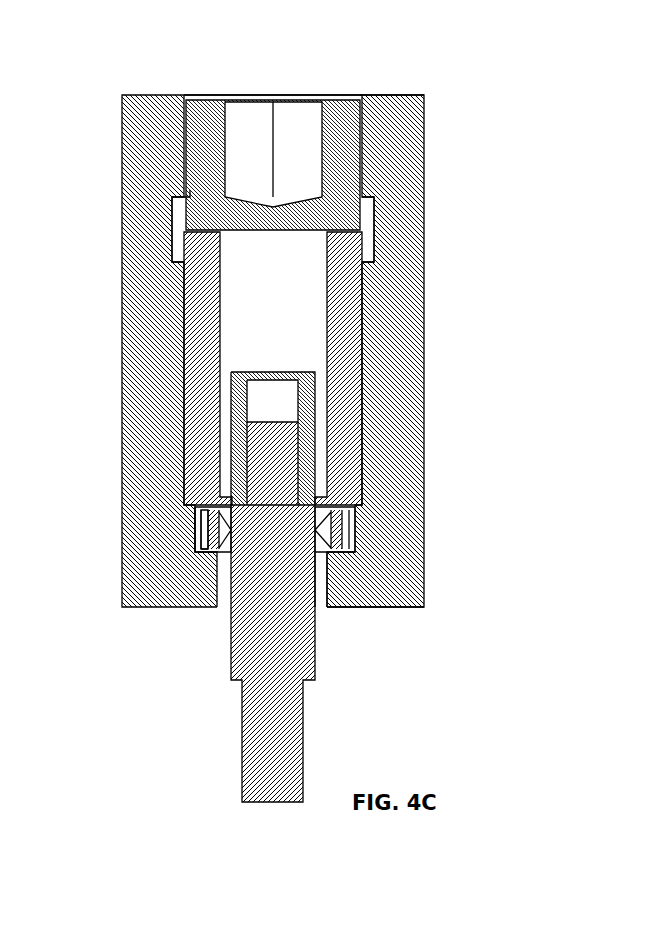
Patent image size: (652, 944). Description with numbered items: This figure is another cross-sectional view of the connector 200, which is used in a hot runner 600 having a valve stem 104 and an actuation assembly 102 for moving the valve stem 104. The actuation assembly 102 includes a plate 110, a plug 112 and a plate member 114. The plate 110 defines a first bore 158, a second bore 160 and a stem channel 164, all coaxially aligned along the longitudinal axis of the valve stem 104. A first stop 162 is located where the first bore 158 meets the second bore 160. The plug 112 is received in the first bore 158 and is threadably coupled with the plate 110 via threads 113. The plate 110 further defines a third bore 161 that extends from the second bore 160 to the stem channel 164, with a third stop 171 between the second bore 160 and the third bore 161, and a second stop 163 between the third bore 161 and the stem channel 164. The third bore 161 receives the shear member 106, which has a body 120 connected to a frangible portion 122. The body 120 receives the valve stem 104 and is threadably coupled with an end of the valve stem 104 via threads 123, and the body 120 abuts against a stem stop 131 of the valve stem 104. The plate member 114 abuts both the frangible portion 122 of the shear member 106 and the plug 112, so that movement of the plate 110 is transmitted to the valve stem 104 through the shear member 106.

The actuation assembly 102 is at (602, 172).
The valve stem 104 is at (315, 625).
The shear member 106 is at (612, 567).
The plate 110 is at (602, 110).
The plug 112 is at (332, 102).
The threads 113 is at (424, 97).
The plate member 114 is at (358, 248).
The body 120 is at (315, 407).
The frangible portion 122 is at (345, 548).
The threads 123 is at (305, 455).
The stem stop 131 is at (312, 552).
The first bore 158 is at (187, 195).
The second bore 160 is at (184, 428).
The third bore 161 is at (205, 527).
The first stop 162 is at (178, 263).
The second stop 163 is at (206, 552).
The stem channel 164 is at (323, 595).
The third stop 171 is at (195, 510).
The connector 200 is at (611, 330).
The hot runner 600 is at (196, 68).